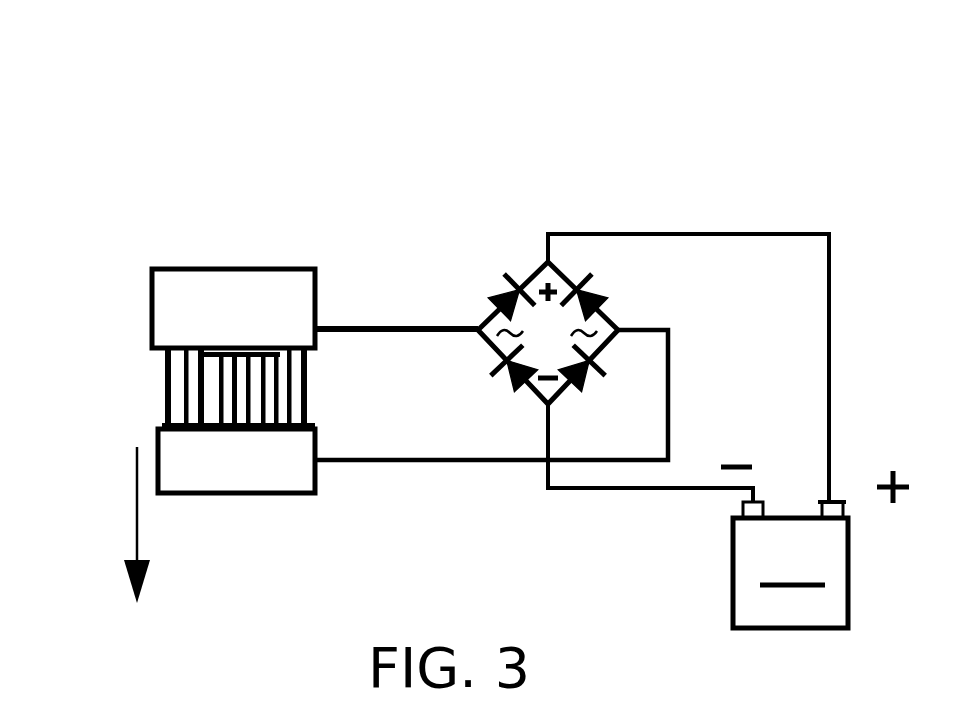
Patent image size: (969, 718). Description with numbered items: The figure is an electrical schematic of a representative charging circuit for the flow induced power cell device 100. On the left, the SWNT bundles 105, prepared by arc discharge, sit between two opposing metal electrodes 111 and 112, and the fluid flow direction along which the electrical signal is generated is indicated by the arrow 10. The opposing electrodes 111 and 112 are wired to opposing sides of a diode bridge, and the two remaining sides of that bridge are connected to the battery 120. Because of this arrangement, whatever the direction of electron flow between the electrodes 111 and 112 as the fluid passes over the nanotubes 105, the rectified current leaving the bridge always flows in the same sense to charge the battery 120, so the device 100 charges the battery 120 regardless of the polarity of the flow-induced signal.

The flow induced power cell device 100 is at (455, 196).
The metal electrode 111 is at (244, 283).
The metal electrode 112 is at (236, 462).
The SWNT bundles 105 is at (152, 382).
The arrow 10 is at (106, 525).
The battery 120 is at (790, 565).